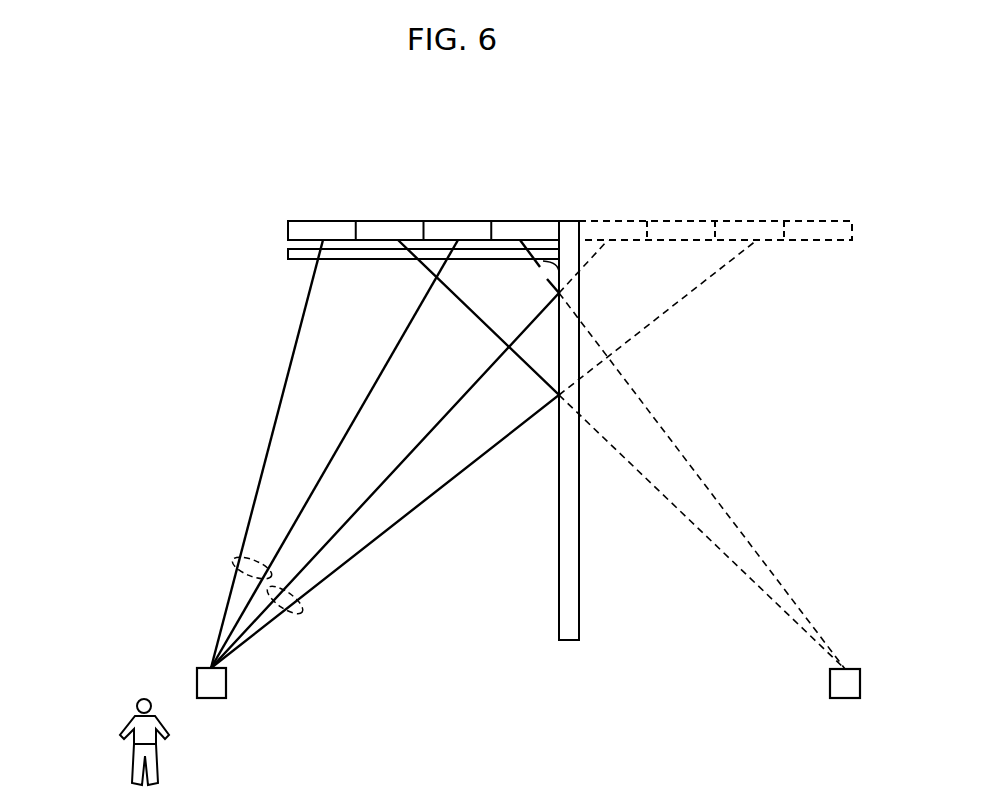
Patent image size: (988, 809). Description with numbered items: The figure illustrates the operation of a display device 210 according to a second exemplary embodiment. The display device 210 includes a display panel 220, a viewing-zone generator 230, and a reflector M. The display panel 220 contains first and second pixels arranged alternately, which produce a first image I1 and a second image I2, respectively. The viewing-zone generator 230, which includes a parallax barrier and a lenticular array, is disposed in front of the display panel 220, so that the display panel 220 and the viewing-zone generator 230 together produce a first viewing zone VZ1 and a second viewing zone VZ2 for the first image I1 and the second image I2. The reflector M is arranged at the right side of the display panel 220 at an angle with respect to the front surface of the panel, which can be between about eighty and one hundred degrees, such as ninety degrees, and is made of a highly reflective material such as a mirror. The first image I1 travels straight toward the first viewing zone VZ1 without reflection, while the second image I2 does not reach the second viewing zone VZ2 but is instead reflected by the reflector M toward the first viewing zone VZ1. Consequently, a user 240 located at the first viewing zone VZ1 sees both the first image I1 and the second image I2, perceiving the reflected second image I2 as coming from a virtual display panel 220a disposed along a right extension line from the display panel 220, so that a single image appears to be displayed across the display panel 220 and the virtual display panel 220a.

The display device 210 is at (295, 174).
The display panel 220 is at (562, 220).
The virtual display panel 220a is at (816, 220).
The viewing-zone generator 230 is at (288, 253).
The user 240 is at (133, 721).
The reflector M is at (573, 640).
The first viewing zone VZ1 is at (211, 698).
The second viewing zone VZ2 is at (845, 697).
The first image I1 is at (248, 578).
The second image I2 is at (297, 615).